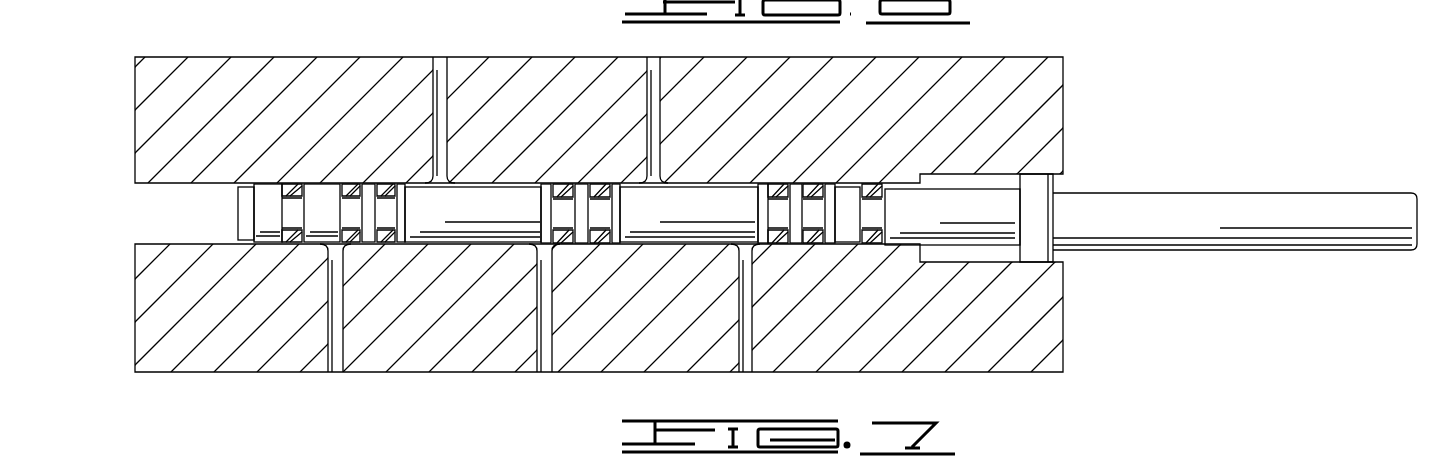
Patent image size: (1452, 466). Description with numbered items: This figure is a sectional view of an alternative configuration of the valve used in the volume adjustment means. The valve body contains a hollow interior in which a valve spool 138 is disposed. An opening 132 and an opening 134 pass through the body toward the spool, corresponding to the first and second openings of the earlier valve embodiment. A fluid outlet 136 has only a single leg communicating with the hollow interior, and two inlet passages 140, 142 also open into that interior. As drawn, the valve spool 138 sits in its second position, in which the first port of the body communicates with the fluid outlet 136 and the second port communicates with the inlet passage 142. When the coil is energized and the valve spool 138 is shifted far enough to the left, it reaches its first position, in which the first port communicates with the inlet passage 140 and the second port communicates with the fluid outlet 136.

The opening 132 is at (438, 56).
The opening 134 is at (651, 57).
The fluid outlet 136 is at (545, 378).
The valve spool 138 is at (1190, 203).
The inlet passage 140 is at (335, 378).
The inlet passage 142 is at (745, 375).